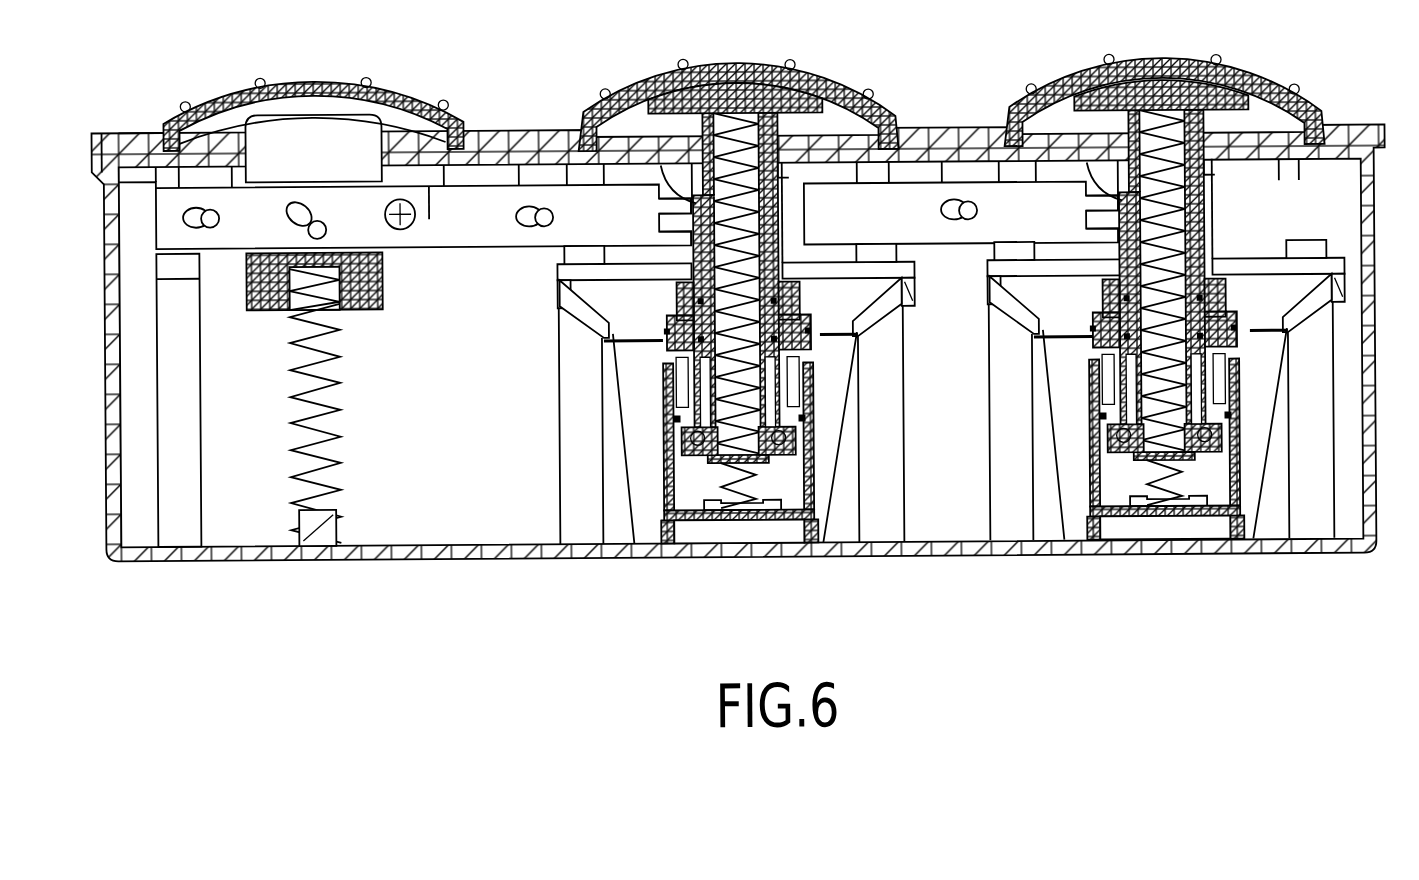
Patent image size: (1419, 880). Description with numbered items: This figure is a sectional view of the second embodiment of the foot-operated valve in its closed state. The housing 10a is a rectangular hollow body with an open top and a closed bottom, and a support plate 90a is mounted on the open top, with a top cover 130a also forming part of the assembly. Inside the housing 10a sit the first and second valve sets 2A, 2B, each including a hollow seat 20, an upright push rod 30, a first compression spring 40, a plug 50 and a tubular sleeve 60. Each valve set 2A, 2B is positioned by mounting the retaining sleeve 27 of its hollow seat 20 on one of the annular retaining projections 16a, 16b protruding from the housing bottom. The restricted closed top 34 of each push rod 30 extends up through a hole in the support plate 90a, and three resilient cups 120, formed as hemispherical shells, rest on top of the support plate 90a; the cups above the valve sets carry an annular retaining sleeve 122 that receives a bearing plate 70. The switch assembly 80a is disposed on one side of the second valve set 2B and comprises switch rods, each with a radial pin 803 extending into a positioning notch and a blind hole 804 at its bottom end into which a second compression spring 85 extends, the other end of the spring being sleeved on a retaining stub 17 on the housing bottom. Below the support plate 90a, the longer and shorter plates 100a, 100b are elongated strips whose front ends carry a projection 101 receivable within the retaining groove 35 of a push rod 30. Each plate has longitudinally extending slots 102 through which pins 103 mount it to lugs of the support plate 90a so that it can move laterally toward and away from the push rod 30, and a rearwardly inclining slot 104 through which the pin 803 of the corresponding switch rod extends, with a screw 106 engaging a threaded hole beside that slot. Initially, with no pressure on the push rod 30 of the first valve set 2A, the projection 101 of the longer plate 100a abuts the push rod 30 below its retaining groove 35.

The housing 10a is at (753, 342).
The support plate 90a is at (105, 122).
The top cover 130a is at (153, 99).
The switch assembly 80a is at (313, 103).
The resilient cup 120 is at (744, 77).
The annular retaining sleeve 122 is at (762, 98).
The shorter plate 100b is at (424, 254).
The longer plate 100a is at (961, 284).
The projection 101 is at (857, 215).
The longitudinally extending slot 102 is at (575, 217).
The pin 103 is at (590, 300).
The radial pin 803 is at (281, 216).
The screw 106 is at (409, 243).
The rearwardly inclining slot 104 is at (343, 294).
The blind hole 804 is at (341, 334).
The second compression spring 85 is at (352, 423).
The retaining stub 17 is at (315, 566).
The hollow seat 20 is at (951, 270).
The second valve set 2B is at (755, 424).
The first valve set 2A is at (1162, 421).
The tubular sleeve 60 is at (944, 409).
The retaining sleeve 27 is at (953, 564).
The annular retaining projection 16b is at (753, 572).
The annular retaining projection 16a is at (1164, 563).
The bearing plate 70 is at (949, 236).
The first compression spring 40 is at (954, 358).
The plug 50 is at (972, 448).
The upright push rod 30 is at (960, 79).
The restricted closed top 34 is at (934, 109).
The retaining groove 35 is at (864, 114).